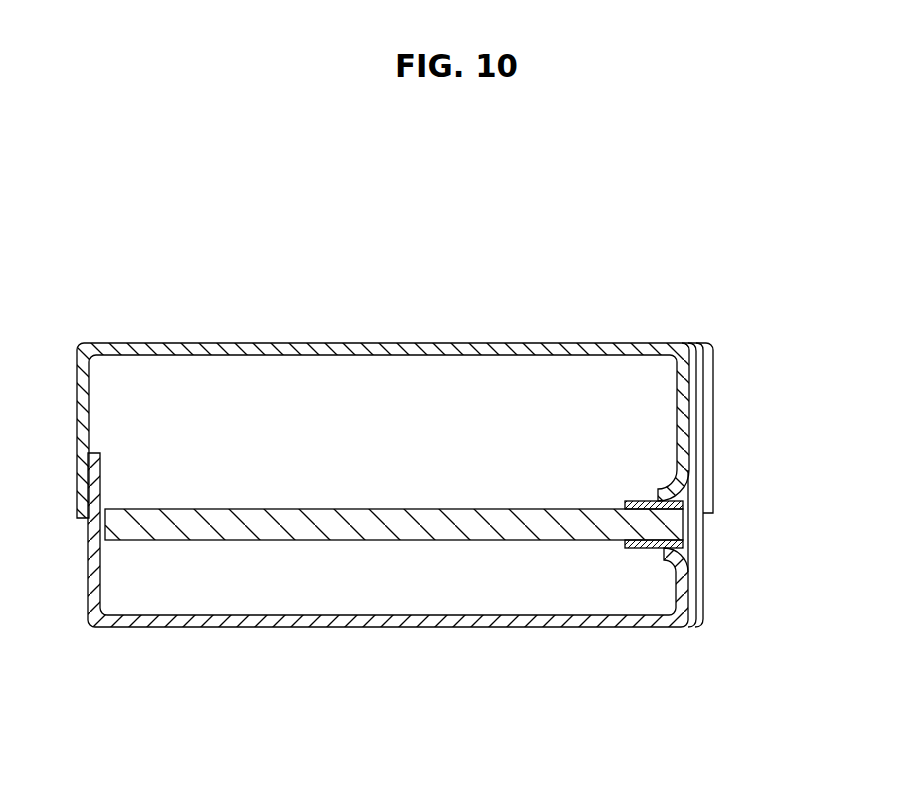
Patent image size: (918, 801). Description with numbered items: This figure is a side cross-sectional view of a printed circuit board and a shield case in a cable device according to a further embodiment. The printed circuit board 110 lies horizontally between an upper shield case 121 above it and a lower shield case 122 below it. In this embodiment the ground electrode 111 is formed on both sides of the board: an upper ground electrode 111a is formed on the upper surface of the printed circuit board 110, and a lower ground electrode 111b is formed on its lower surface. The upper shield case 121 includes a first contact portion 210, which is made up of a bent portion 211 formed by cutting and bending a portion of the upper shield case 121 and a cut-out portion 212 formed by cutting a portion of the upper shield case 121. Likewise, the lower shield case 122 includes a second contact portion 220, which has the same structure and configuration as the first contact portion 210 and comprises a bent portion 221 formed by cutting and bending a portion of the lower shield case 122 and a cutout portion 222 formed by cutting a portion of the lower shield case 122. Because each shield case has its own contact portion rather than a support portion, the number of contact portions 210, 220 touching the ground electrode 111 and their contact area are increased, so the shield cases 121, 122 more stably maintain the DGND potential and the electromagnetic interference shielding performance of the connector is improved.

The printed circuit board 110 is at (358, 503).
The ground electrode 111 is at (730, 518).
The upper ground electrode 111a is at (705, 498).
The lower ground electrode 111b is at (705, 538).
The upper shield case 121 is at (386, 337).
The lower shield case 122 is at (348, 634).
The first contact portion 210 is at (764, 428).
The bent portion 211 is at (706, 379).
The cut-out portion 212 is at (706, 440).
The second contact portion 220 is at (762, 570).
The bent portion 221 is at (704, 558).
The cutout portion 222 is at (704, 598).